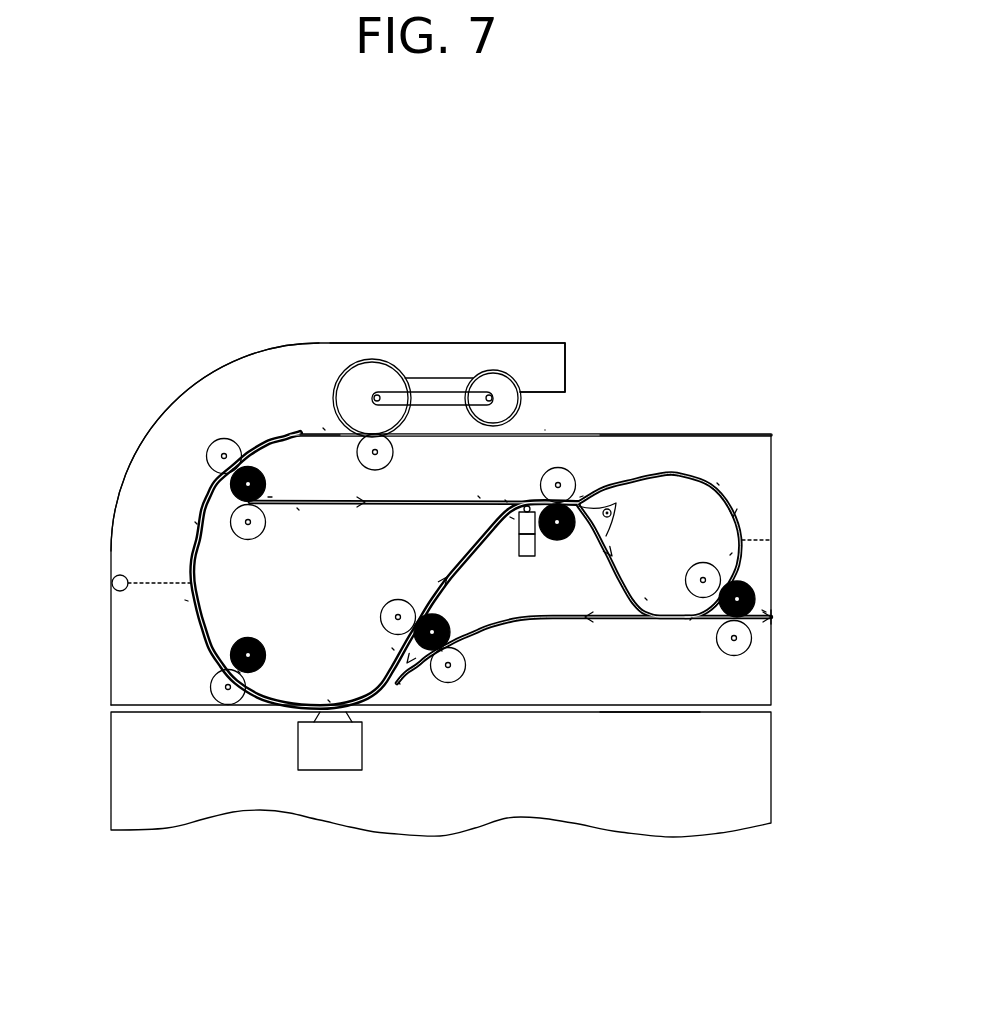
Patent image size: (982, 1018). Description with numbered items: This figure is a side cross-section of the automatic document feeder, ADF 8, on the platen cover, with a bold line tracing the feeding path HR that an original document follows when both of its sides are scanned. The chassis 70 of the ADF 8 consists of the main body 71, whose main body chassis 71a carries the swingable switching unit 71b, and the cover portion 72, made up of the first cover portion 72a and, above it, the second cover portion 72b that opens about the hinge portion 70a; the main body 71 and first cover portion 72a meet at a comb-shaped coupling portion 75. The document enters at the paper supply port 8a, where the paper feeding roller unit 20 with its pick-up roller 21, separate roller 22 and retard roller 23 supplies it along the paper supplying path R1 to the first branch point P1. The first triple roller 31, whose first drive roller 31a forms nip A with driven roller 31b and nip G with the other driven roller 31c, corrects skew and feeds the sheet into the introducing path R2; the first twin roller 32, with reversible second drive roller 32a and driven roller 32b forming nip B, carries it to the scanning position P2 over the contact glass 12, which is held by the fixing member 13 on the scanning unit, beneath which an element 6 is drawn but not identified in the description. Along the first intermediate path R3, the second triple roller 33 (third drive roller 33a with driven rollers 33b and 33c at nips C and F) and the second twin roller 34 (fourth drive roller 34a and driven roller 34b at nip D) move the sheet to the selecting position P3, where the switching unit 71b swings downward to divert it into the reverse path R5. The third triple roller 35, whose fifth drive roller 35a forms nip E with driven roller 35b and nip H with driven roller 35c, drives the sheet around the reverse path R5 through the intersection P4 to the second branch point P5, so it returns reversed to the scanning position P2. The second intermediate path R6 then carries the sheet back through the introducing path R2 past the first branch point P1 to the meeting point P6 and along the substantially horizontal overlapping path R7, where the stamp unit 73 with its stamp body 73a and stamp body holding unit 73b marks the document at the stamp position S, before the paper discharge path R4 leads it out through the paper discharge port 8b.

The control unit 6 is at (325, 762).
The ADF 8 is at (138, 368).
The paper supply port 8a is at (540, 427).
The paper discharge port 8b is at (772, 617).
The contact glass 12 is at (325, 714).
The fixing member 13 is at (347, 712).
The paper feeding roller unit 20 is at (419, 356).
The pick-up roller 21 is at (493, 385).
The separate roller 22 is at (365, 383).
The retard roller 23 is at (378, 465).
The first triple roller 31 is at (258, 450).
The first drive roller 31a is at (268, 480).
The driven roller 31b is at (230, 443).
The driven roller 31c is at (258, 535).
The first twin roller 32 is at (156, 646).
The second drive roller 32a is at (252, 648).
The driven roller 32b is at (218, 683).
The second triple roller 33 is at (444, 691).
The third drive roller 33a is at (428, 616).
The driven roller 33b is at (400, 600).
The driven roller 33c is at (480, 664).
The second twin roller 34 is at (595, 498).
The fourth drive roller 34a is at (562, 542).
The driven roller 34b is at (558, 468).
The third triple roller 35 is at (737, 704).
The fifth drive roller 35a is at (752, 588).
The driven roller 35b is at (704, 566).
The driven roller 35c is at (725, 647).
The chassis 70 is at (118, 462).
The hinge portion 70a is at (114, 578).
The main body 71 is at (800, 700).
The main body chassis 71a is at (690, 699).
The switching unit 71b is at (620, 513).
The cover portion 72 is at (733, 293).
The first cover portion 72a is at (692, 427).
The second cover portion 72b is at (578, 360).
The stamp unit 73 is at (521, 591).
The stamp body 73a is at (520, 552).
The stamp body holding unit 73b is at (527, 558).
The coupling portion 75 is at (782, 538).
The feeding path HR is at (303, 425).
The stamp position S is at (513, 518).
The nip portion A is at (205, 473).
The nip portion B is at (218, 663).
The nip portion C is at (418, 596).
The nip portion D is at (542, 497).
The nip portion E is at (724, 560).
The nip portion F is at (458, 637).
The nip portion G is at (277, 492).
The nip portion H is at (760, 606).
The first branch point P1 is at (187, 522).
The scanning position P2 is at (328, 693).
The selecting position P3 is at (582, 495).
The intersection P4 is at (690, 623).
The second branch point P5 is at (398, 680).
The meeting point P6 is at (480, 495).
The paper supplying path R1 is at (323, 422).
The introducing path R2 is at (185, 600).
The first intermediate path R3 is at (392, 648).
The paper discharge path R4 is at (645, 598).
The reverse path R5 is at (717, 483).
The second intermediate path R6 is at (297, 508).
The overlapping path R7 is at (505, 500).